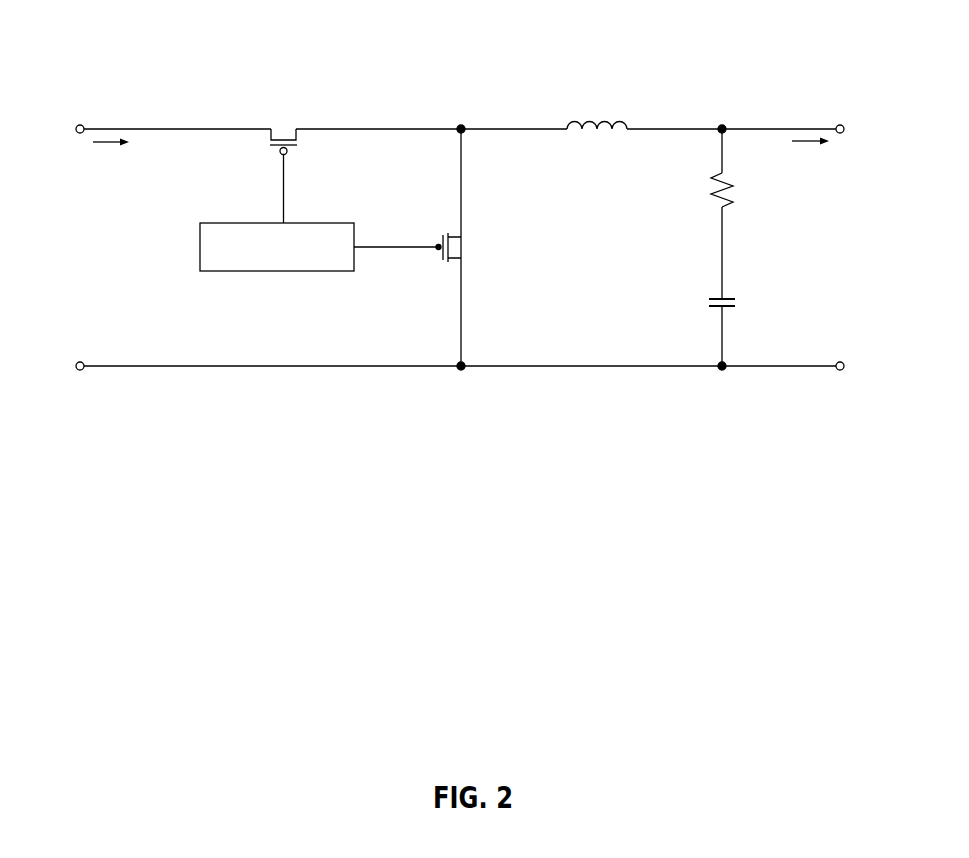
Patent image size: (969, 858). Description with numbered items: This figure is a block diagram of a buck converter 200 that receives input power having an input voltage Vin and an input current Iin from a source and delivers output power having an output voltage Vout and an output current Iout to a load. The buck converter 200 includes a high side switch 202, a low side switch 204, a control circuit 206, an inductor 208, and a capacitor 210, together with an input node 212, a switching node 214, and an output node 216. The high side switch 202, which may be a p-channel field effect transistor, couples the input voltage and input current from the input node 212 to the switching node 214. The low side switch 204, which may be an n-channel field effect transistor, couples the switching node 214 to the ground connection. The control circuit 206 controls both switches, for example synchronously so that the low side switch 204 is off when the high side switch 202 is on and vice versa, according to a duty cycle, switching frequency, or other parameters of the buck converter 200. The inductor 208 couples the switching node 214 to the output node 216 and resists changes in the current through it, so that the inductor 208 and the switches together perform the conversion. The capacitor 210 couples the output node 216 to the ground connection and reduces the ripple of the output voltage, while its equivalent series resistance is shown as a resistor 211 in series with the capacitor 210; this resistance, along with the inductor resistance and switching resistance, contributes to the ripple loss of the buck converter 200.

The buck converter 200 is at (697, 565).
The high side switch 202 is at (292, 114).
The low side switch 204 is at (472, 255).
The control circuit 206 is at (291, 255).
The inductor 208 is at (614, 107).
The capacitor 210 is at (703, 287).
The resistor 211 is at (697, 167).
The input node 212 is at (104, 106).
The switching node 214 is at (471, 111).
The output node 216 is at (733, 111).